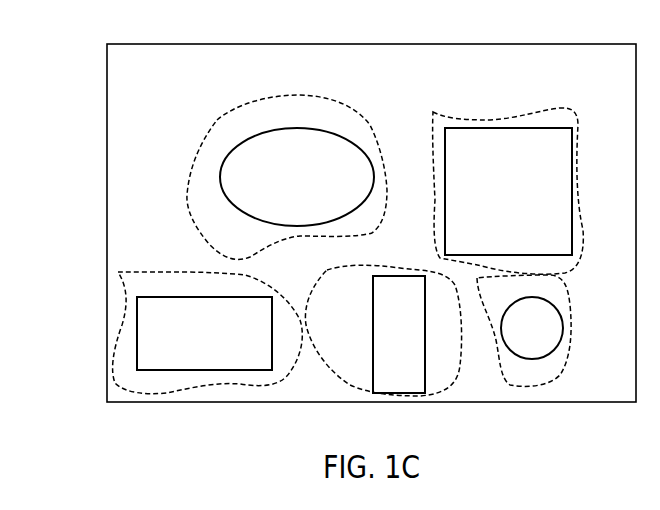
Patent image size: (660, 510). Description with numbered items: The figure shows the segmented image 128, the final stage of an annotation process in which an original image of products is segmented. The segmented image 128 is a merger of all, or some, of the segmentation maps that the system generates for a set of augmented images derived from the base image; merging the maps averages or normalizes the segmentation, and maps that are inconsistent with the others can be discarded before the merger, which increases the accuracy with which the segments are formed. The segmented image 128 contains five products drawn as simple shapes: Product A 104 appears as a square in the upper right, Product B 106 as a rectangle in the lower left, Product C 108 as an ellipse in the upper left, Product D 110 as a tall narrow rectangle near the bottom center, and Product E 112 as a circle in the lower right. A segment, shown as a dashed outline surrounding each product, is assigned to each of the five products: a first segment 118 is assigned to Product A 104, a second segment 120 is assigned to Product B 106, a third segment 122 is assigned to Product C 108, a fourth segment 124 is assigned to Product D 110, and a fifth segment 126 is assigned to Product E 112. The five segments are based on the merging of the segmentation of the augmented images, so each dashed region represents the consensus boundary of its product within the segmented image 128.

The segmented image 128 is at (107, 143).
The Product A 104 is at (545, 127).
The first segment 118 is at (472, 117).
The Product C 108 is at (287, 127).
The third segment 122 is at (228, 110).
The Product B 106 is at (165, 297).
The second segment 120 is at (138, 272).
The Product D 110 is at (400, 270).
The fourth segment 124 is at (333, 372).
The Product E 112 is at (572, 343).
The fifth segment 126 is at (545, 386).